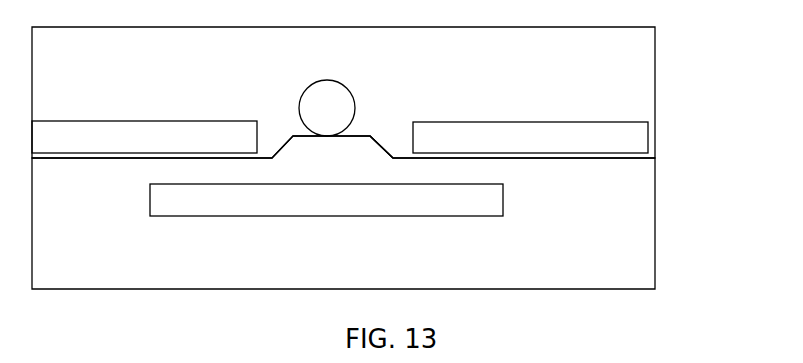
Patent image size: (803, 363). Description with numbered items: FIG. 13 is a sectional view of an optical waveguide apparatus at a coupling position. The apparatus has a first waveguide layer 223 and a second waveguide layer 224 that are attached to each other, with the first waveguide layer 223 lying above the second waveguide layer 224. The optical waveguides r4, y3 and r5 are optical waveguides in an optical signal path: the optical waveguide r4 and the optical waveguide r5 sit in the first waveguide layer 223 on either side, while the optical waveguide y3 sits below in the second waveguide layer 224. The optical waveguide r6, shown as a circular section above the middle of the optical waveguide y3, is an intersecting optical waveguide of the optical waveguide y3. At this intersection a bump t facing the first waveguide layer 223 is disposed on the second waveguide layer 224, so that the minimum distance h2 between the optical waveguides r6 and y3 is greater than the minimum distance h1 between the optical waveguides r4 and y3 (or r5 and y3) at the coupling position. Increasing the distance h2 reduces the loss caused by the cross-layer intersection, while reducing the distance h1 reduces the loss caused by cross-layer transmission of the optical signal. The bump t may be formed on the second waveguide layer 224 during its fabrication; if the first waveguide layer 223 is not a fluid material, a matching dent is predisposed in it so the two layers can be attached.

The first waveguide layer 223 is at (655, 93).
The second waveguide layer 224 is at (655, 230).
The optical waveguide r4 is at (226, 121).
The optical waveguide r5 is at (471, 122).
The intersecting optical waveguide r6 is at (352, 95).
The bump t is at (366, 152).
The minimum distance h1 is at (215, 154).
The minimum distance h2 is at (327, 136).
The optical waveguide y3 is at (503, 202).